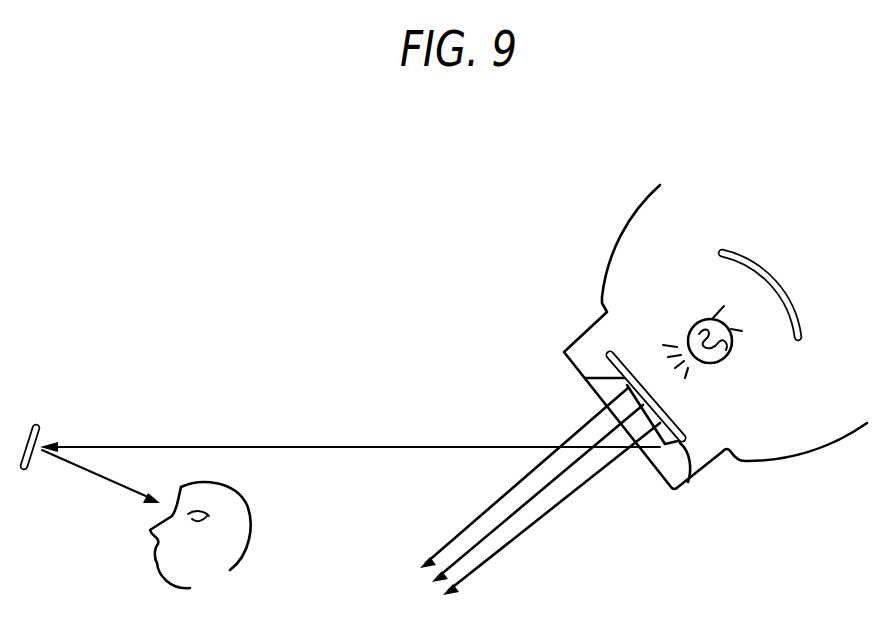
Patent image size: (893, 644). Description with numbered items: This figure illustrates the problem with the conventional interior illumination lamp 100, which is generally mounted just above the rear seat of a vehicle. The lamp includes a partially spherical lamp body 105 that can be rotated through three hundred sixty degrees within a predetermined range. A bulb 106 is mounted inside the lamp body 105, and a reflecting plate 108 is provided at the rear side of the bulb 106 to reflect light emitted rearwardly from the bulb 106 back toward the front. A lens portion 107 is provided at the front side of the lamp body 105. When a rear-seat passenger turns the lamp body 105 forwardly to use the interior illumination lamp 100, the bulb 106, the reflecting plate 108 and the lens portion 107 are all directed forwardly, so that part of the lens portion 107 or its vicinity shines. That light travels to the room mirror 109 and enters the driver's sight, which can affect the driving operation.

The interior illumination lamp 100 is at (682, 337).
The lamp body 105 is at (583, 308).
The bulb 106 is at (728, 356).
The lens portion 107 is at (688, 482).
The reflecting plate 108 is at (778, 280).
The room mirror 109 is at (43, 430).